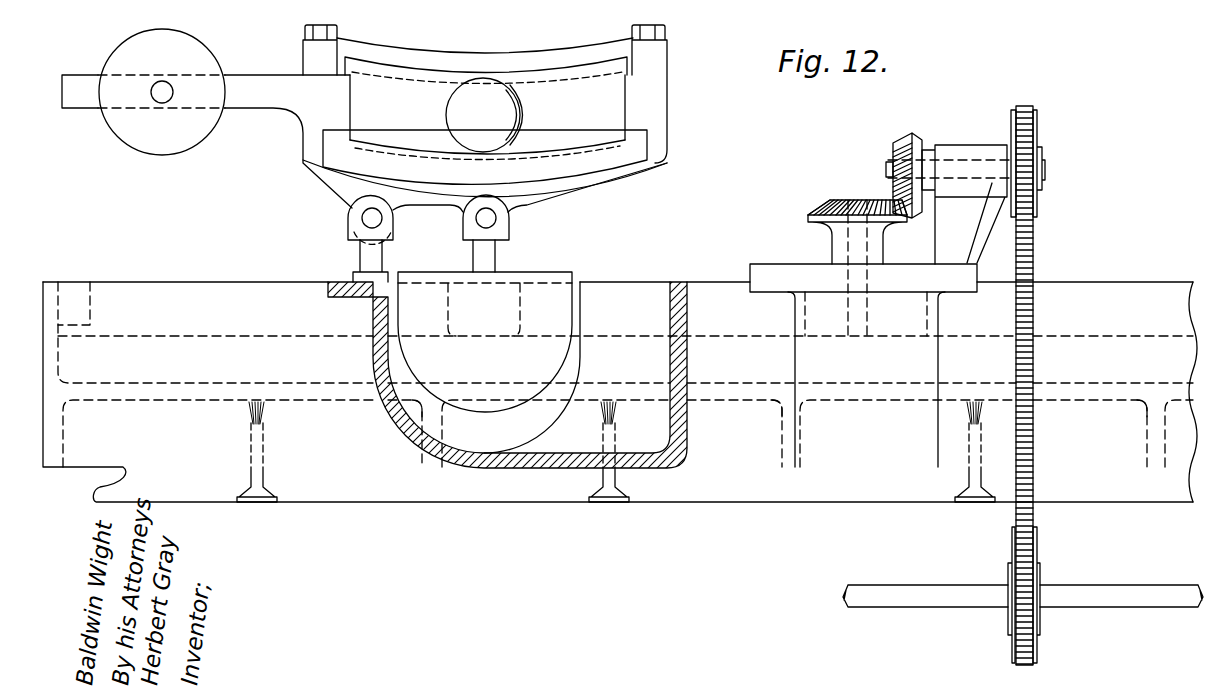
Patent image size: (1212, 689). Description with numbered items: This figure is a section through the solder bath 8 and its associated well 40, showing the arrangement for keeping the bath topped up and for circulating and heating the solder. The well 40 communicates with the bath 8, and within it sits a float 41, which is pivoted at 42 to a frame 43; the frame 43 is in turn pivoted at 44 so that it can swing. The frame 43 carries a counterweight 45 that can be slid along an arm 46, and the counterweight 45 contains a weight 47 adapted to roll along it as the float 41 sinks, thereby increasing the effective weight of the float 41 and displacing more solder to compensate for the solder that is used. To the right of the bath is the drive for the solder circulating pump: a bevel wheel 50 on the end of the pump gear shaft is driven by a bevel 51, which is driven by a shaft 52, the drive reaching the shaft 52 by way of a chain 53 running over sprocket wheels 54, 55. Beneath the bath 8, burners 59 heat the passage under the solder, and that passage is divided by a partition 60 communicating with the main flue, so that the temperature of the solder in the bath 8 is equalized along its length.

The solder bath 8 is at (102, 404).
The well 40 is at (472, 434).
The float 41 is at (542, 297).
The pivot 42 is at (492, 213).
The frame 43 is at (418, 153).
The pivot 44 is at (363, 218).
The counterweight 45 is at (160, 140).
The arm 46 is at (245, 80).
The weight 47 is at (521, 112).
The bevel wheel 50 is at (850, 204).
The bevel 51 is at (892, 157).
The shaft 52 is at (927, 600).
The chain 53 is at (1030, 263).
The sprocket wheel 54 is at (1040, 556).
The sprocket wheel 55 is at (1040, 212).
The burners 59 is at (268, 447).
The partition 60 is at (396, 426).